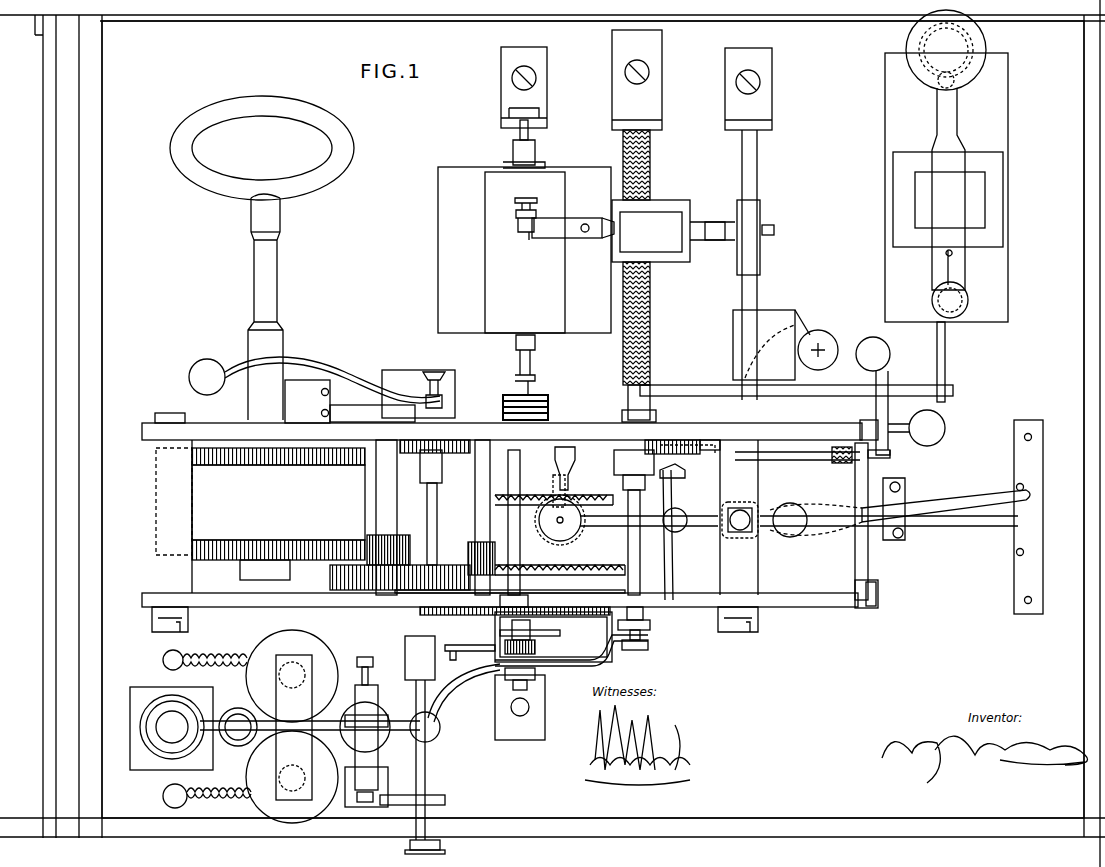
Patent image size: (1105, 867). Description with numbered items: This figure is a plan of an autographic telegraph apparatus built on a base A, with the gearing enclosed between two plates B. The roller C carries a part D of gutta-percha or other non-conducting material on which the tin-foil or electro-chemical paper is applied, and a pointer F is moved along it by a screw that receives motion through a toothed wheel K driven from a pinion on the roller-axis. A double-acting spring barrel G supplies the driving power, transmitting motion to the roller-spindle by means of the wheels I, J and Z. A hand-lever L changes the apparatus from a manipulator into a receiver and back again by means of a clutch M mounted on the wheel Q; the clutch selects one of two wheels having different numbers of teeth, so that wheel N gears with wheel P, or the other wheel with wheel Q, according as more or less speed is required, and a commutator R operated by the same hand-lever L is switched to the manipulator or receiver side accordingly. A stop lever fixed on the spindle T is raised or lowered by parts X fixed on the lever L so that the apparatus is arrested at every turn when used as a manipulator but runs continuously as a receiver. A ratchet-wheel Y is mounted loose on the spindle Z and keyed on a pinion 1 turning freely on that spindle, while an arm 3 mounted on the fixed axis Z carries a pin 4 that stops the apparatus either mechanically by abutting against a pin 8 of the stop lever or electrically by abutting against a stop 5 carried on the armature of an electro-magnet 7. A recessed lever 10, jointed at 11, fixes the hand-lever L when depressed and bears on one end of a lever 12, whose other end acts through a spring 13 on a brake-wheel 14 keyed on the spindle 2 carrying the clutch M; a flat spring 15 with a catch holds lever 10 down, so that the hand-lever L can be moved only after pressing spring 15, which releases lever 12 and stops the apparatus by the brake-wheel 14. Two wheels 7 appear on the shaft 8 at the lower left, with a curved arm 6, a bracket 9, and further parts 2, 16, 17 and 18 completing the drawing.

The base A is at (593, 419).
The plates B is at (502, 515).
The roller C is at (524, 250).
The non-conducting part of roller D is at (525, 252).
The pointer F is at (564, 219).
The double-acting spring barrel G is at (260, 516).
The wheel I is at (388, 517).
The wheel J is at (457, 517).
The toothed wheel K is at (672, 440).
The hand-lever L is at (799, 520).
The clutch M is at (616, 486).
The wheel N is at (560, 510).
The wheel P is at (560, 565).
The wheel Q is at (554, 497).
The commutator R is at (900, 528).
The spindle T is at (634, 522).
The parts fixed on lever L X is at (668, 532).
The ratchet-wheel Y is at (515, 620).
The spindle Z is at (514, 528).
The pinion 1 is at (520, 688).
The spindle 2 is at (516, 641).
The arm 3 is at (571, 654).
The pin 4 is at (468, 653).
The stop 5 is at (548, 647).
The curved arm 6 is at (464, 693).
The electro-magnet 7 is at (292, 726).
The pin 8 is at (310, 729).
The bracket 9 is at (553, 637).
The lever 10 is at (873, 396).
The joint 11 is at (882, 594).
The lever 12 is at (888, 453).
The spring 13 is at (819, 460).
The brake-wheel 14 is at (556, 466).
The flat spring 15 is at (902, 428).
The lever 16 is at (931, 305).
The rod 17 is at (799, 362).
The contact discs 18 is at (536, 402).